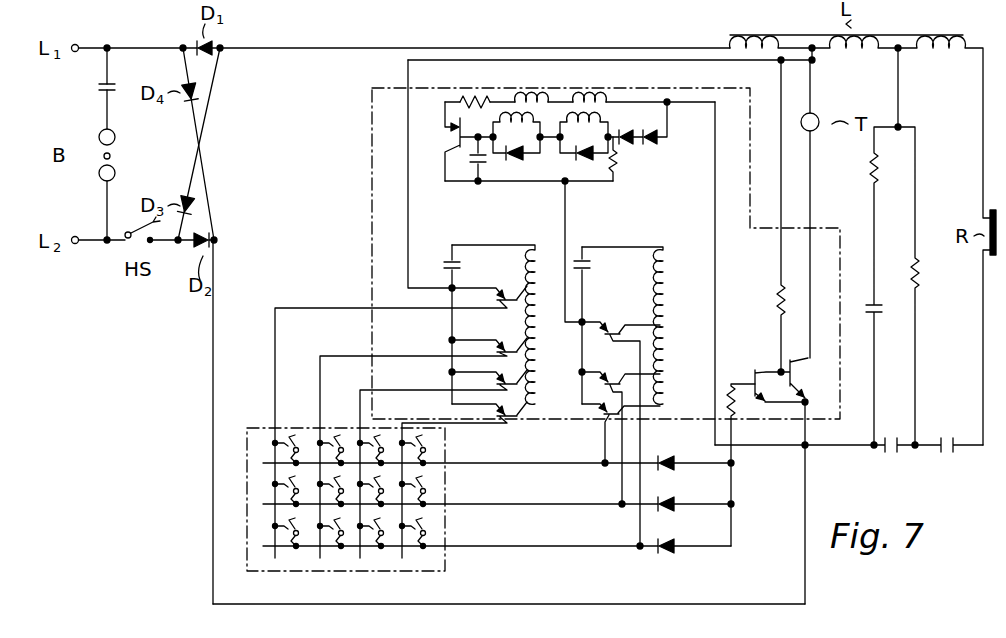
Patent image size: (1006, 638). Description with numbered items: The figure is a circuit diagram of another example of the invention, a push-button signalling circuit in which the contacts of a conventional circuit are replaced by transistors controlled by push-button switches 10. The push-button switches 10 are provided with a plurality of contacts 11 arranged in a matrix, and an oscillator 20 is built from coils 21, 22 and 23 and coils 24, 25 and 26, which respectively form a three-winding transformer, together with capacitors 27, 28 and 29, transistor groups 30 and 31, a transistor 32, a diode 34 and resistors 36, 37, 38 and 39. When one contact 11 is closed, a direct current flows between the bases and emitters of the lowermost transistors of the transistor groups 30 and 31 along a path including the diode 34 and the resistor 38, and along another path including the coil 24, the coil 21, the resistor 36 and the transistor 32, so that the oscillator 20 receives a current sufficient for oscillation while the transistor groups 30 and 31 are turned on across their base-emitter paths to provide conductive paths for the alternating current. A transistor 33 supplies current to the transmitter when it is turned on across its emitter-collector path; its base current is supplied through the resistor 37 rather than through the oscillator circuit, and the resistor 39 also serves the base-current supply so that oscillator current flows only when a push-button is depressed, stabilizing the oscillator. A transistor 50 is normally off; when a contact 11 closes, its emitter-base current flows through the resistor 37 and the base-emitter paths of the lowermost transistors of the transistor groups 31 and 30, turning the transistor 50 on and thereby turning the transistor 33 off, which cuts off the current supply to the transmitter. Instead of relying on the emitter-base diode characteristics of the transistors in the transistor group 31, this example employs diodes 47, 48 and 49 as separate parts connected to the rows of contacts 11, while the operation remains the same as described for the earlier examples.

The push-button switches 10 is at (452, 499).
The contacts 11 is at (433, 449).
The oscillator 20 is at (372, 180).
The coil 21 is at (532, 98).
The coil 22 is at (498, 121).
The coil 23 is at (535, 245).
The coil 24 is at (588, 98).
The coil 25 is at (608, 125).
The coil 26 is at (675, 256).
The capacitor 27 is at (445, 266).
The capacitor 28 is at (592, 268).
The capacitor 29 is at (478, 163).
The transistor group 30 is at (496, 277).
The transistor group 31 is at (598, 306).
The transistor 32 is at (448, 133).
The transistor 33 is at (806, 372).
The diode 34 is at (645, 142).
The resistor 36 is at (473, 98).
The resistor 37 is at (725, 395).
The resistor 38 is at (616, 175).
The resistor 39 is at (729, 273).
The diode 47 is at (680, 457).
The diode 48 is at (680, 497).
The diode 49 is at (680, 540).
The transistor 50 is at (761, 368).